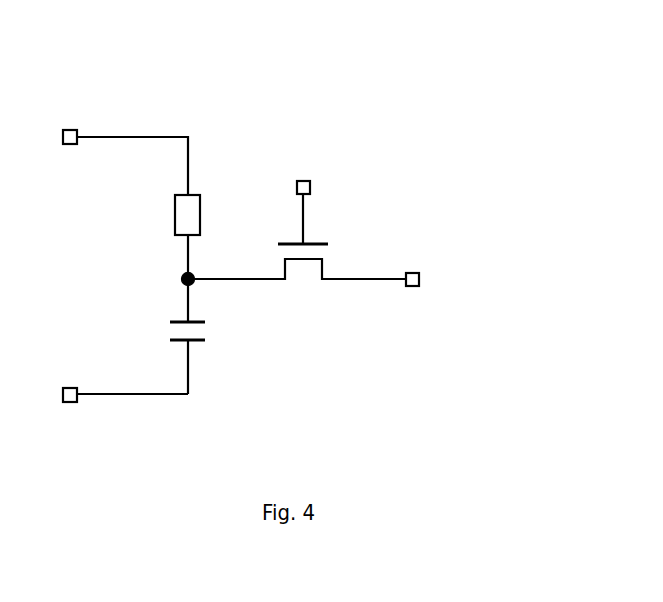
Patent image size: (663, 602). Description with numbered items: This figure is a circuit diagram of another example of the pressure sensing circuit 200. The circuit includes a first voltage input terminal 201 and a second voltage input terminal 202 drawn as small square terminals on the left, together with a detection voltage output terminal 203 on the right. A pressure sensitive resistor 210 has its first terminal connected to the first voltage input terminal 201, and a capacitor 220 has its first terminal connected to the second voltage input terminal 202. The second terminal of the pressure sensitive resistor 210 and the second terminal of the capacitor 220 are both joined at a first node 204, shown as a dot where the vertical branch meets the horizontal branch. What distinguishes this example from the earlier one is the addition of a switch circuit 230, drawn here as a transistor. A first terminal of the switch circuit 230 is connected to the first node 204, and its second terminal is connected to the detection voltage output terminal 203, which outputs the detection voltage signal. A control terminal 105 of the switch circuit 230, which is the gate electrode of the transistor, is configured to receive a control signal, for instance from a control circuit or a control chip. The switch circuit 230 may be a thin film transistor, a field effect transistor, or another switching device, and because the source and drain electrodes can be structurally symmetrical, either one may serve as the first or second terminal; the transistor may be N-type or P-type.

The pressure sensing circuit 200 is at (285, 97).
The first voltage input terminal 201 is at (70, 125).
The second voltage input terminal 202 is at (73, 407).
The detection voltage output terminal 203 is at (410, 263).
The first node 204 is at (177, 273).
The pressure sensitive resistor 210 is at (202, 208).
The capacitor 220 is at (207, 333).
The switch circuit 230 is at (315, 237).
The control terminal 105 is at (305, 180).